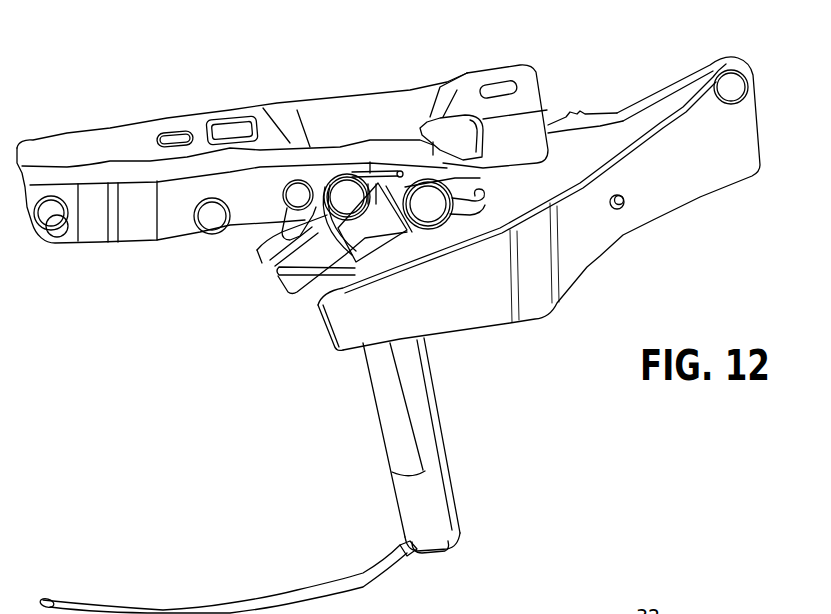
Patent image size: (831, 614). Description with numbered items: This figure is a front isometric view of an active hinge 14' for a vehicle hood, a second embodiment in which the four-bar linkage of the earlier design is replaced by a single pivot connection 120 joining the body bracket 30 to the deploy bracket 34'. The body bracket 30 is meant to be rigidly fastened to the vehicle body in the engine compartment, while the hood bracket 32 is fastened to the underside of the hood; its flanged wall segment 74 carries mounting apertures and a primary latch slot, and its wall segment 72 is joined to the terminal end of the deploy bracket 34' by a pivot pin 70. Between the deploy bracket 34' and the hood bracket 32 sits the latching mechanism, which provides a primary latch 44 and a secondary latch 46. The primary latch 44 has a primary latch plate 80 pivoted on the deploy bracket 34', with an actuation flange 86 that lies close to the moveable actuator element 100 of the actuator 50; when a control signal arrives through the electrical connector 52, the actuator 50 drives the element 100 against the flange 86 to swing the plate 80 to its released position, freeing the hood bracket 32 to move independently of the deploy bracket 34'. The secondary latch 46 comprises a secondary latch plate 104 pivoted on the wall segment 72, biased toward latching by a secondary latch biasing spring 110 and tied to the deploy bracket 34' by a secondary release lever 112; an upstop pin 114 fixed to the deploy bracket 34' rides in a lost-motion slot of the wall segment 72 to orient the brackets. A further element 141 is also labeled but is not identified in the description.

The active hinge 14' is at (584, 47).
The body bracket 30 is at (548, 320).
The hood bracket 32 is at (118, 125).
The deploy bracket 34' is at (668, 80).
The primary latch 44 is at (434, 118).
The secondary latch 46 is at (352, 174).
The actuator 50 is at (445, 493).
The electrical connector 52 is at (165, 607).
The pivot pin 70 is at (213, 218).
The wall segment 72 is at (133, 233).
The flanged wall segment 74 is at (55, 150).
The primary latch plate 80 is at (422, 236).
The actuation flange 86 is at (358, 248).
The moveable actuator element 100 is at (393, 252).
The secondary latch plate 104 is at (267, 257).
The secondary latch biasing spring 110 is at (378, 172).
The secondary release lever 112 is at (327, 278).
The upstop pin 114 is at (298, 180).
The single pivot connection 120 is at (740, 86).
The element 141 is at (572, 613).